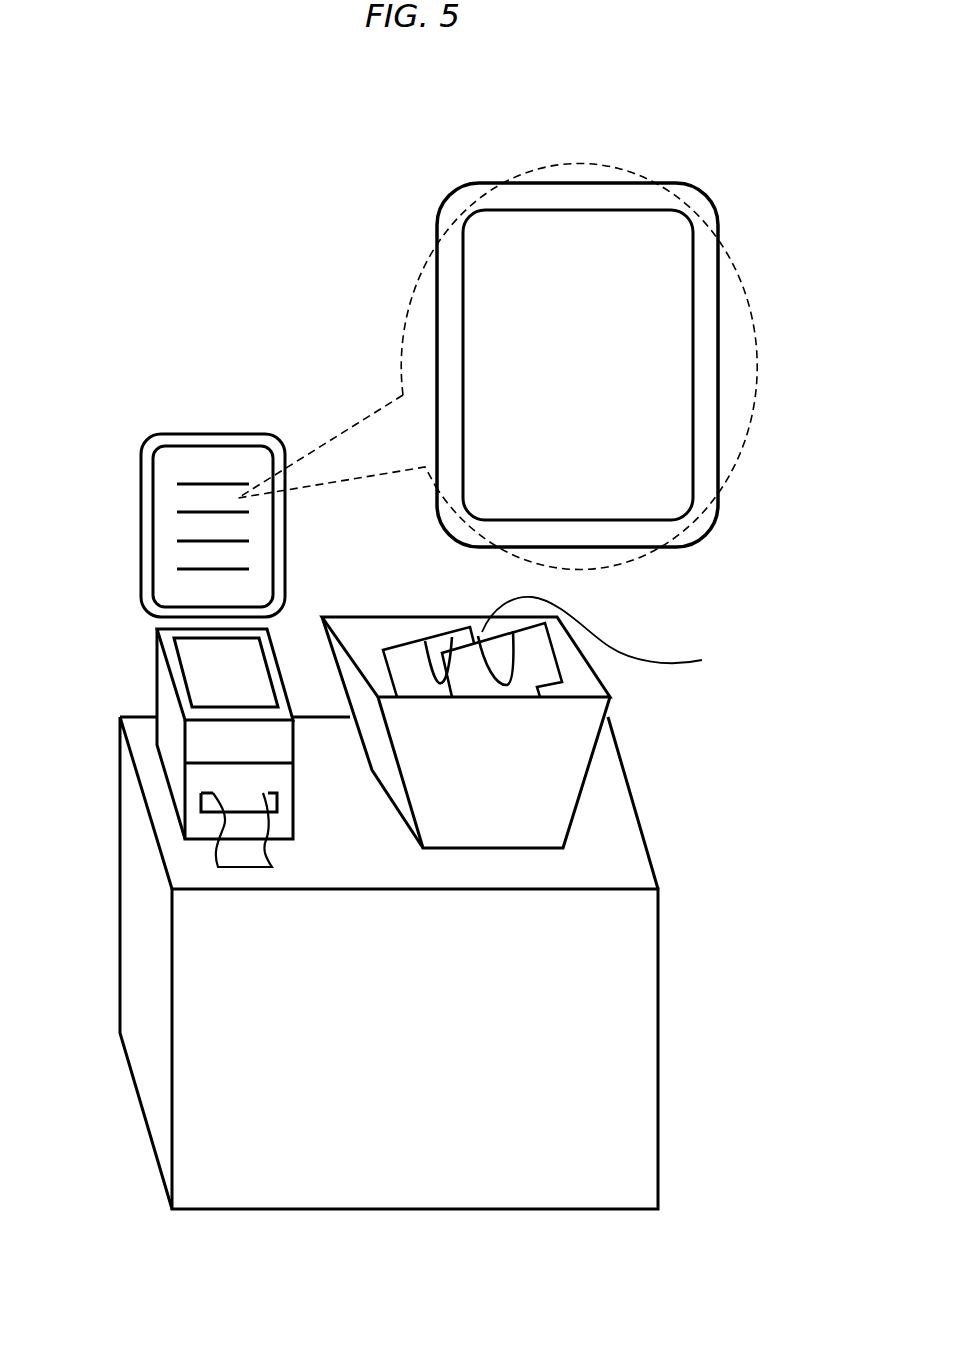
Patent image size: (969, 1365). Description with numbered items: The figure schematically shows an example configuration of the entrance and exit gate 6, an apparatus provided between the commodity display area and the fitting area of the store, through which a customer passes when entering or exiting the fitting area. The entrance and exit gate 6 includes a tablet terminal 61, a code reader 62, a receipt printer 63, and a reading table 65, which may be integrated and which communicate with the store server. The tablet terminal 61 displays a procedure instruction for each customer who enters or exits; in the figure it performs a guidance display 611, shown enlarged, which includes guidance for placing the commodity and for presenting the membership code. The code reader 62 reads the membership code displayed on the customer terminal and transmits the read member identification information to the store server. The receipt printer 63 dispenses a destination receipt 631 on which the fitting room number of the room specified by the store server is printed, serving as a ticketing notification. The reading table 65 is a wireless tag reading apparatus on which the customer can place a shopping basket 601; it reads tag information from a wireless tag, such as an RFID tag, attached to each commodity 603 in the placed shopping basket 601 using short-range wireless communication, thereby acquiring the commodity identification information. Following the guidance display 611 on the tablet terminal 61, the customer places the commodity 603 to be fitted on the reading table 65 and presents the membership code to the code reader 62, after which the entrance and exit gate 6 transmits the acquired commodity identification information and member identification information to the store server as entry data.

The entrance and exit gate 6 is at (669, 125).
The tablet terminal 61 is at (177, 457).
The guidance display 611 is at (609, 426).
The code reader 62 is at (202, 663).
The receipt printer 63 is at (164, 749).
The fitting room ticket 631 is at (228, 857).
The shopping basket 601 is at (540, 802).
The commodity 603 is at (540, 662).
The reading table 65 is at (608, 837).